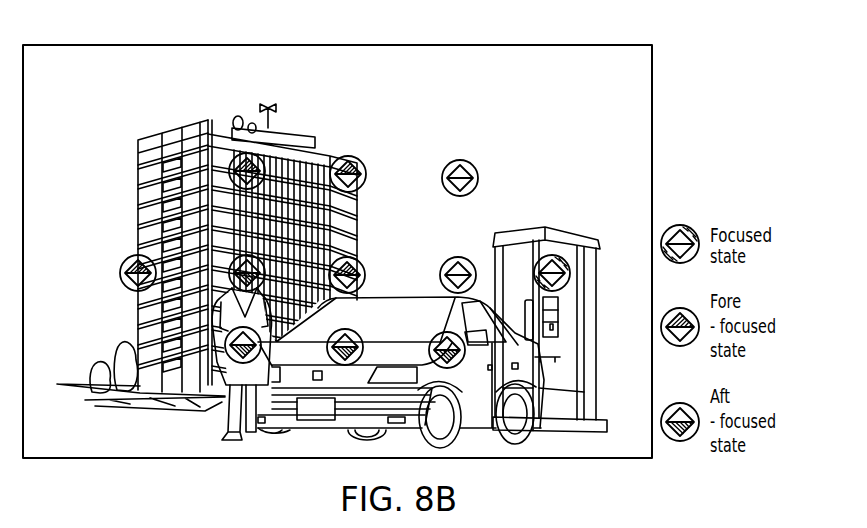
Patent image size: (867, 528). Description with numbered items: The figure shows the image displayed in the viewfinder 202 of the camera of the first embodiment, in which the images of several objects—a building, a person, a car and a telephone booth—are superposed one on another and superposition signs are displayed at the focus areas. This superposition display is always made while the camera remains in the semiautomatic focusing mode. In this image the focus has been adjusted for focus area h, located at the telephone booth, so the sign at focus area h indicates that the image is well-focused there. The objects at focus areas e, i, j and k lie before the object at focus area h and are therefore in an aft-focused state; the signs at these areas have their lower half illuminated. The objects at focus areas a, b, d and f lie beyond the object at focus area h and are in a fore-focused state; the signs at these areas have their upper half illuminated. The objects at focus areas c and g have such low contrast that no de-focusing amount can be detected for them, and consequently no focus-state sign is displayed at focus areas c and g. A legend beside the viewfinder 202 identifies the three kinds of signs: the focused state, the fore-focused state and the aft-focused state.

The viewfinder 202 is at (425, 46).
The focus area a is at (253, 153).
The focus area b is at (353, 156).
The focus area c is at (462, 160).
The focus area d is at (134, 255).
The focus area e is at (234, 261).
The focus area f is at (356, 257).
The focus area g is at (462, 256).
The focus area h is at (562, 252).
The focus area i is at (240, 366).
The focus area j is at (348, 329).
The focus area k is at (447, 332).